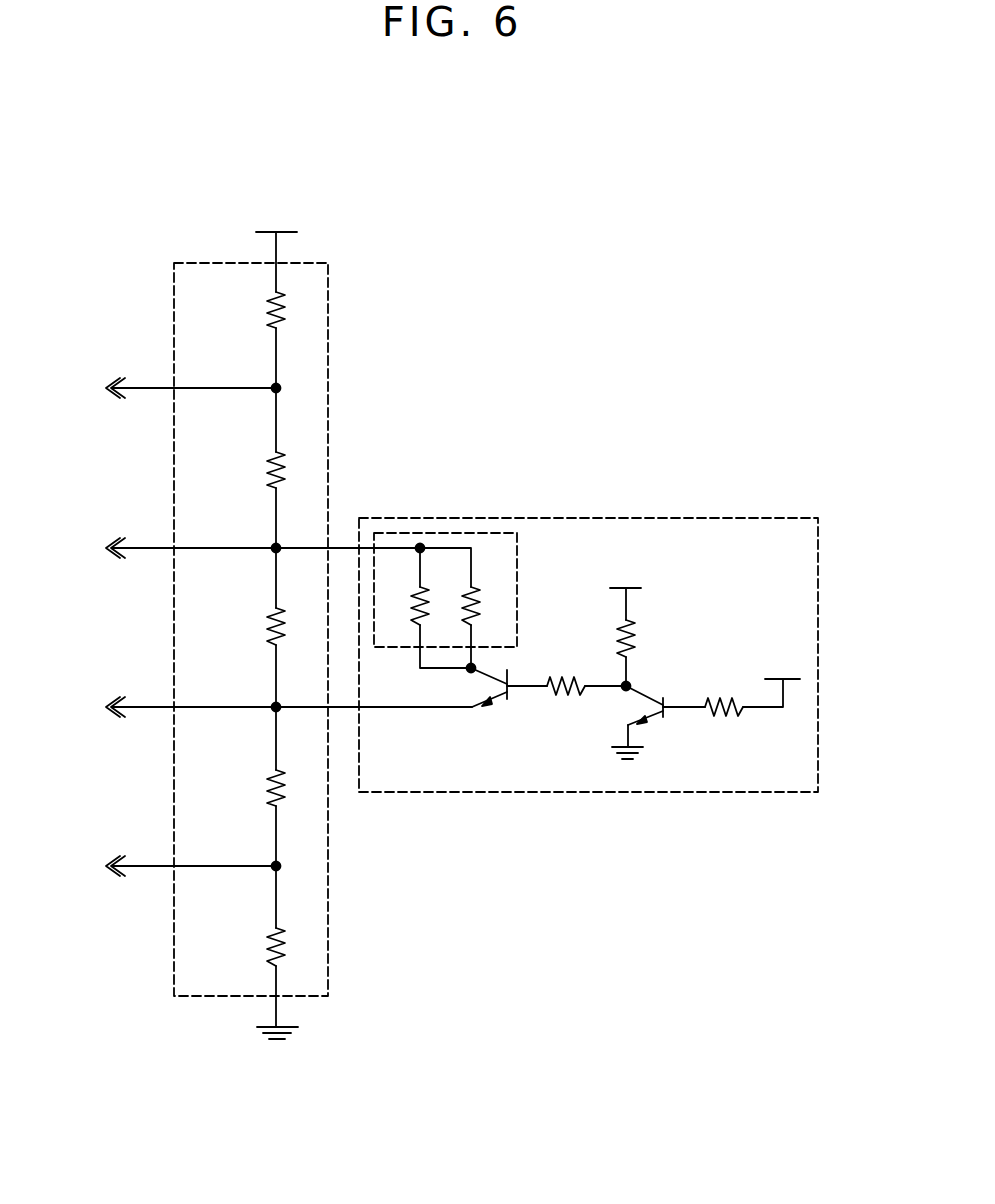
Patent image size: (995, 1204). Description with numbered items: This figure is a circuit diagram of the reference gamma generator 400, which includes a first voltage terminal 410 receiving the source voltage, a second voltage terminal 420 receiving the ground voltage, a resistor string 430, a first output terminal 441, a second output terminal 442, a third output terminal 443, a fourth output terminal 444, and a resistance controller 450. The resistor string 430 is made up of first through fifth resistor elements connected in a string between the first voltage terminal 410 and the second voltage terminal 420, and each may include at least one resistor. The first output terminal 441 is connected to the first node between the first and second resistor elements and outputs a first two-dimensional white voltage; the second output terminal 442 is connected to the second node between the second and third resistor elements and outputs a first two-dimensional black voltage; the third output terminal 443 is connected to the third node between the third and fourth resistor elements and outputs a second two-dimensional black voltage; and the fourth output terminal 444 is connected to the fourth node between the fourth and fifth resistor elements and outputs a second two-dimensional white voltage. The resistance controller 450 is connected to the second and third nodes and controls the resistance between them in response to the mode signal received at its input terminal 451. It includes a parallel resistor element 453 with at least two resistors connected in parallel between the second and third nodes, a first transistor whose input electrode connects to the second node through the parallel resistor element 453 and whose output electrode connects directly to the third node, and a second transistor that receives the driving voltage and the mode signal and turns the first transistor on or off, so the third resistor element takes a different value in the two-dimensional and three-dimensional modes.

The reference gamma generator 400 is at (236, 193).
The first voltage terminal 410 is at (297, 234).
The second voltage terminal 420 is at (292, 1026).
The resistor string 430 is at (333, 870).
The first output terminal 441 is at (148, 388).
The second output terminal 442 is at (148, 548).
The third output terminal 443 is at (148, 707).
The fourth output terminal 444 is at (148, 866).
The resistance controller 450 is at (651, 518).
The input terminal 451 is at (795, 681).
The parallel resistor element 453 is at (445, 533).